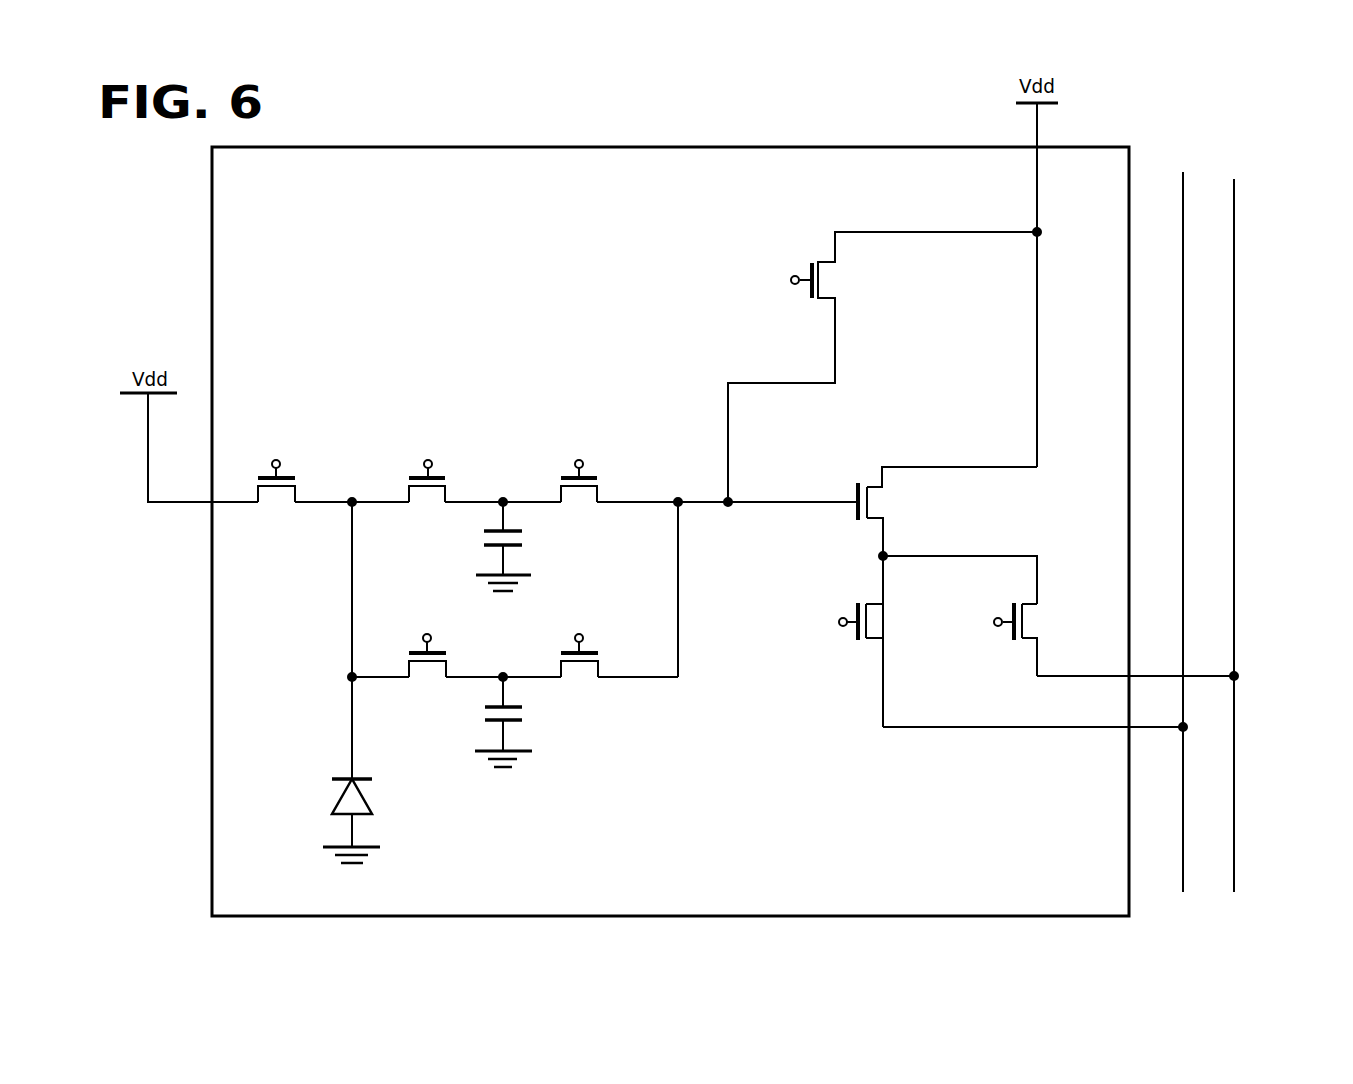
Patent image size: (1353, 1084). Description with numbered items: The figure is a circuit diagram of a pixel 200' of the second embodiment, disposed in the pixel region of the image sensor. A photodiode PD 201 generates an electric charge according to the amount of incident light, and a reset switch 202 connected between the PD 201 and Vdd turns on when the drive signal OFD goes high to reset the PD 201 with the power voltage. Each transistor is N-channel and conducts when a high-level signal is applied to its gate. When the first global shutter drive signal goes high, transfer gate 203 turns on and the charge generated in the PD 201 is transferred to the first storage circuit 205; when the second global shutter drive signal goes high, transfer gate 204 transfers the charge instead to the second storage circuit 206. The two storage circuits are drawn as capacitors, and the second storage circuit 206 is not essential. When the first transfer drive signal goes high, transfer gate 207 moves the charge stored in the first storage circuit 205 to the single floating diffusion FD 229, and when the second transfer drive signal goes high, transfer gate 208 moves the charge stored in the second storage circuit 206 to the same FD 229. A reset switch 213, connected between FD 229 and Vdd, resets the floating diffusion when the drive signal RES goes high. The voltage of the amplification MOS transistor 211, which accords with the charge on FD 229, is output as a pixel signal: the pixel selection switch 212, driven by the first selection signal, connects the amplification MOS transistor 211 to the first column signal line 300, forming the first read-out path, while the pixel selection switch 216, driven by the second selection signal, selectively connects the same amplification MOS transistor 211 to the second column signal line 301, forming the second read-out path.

The pixel 200' is at (628, 531).
The photodiode 201 is at (320, 795).
The reset switch 202 is at (297, 481).
The transfer gate 203 is at (447, 481).
The transfer gate 204 is at (448, 656).
The storage circuit MEM1 205 is at (530, 539).
The storage circuit MEM2 206 is at (530, 715).
The transfer gate 207 is at (600, 481).
The transfer gate 208 is at (600, 656).
The amplification MOS transistor 211 is at (890, 505).
The pixel selection switch 212 is at (867, 645).
The reset switch 213 is at (817, 255).
The pixel selection switch 216 is at (1043, 627).
The floating diffusion 229 is at (735, 498).
The column signal line VLINE1 300 is at (1184, 193).
The column signal line VLINE2 301 is at (1236, 850).